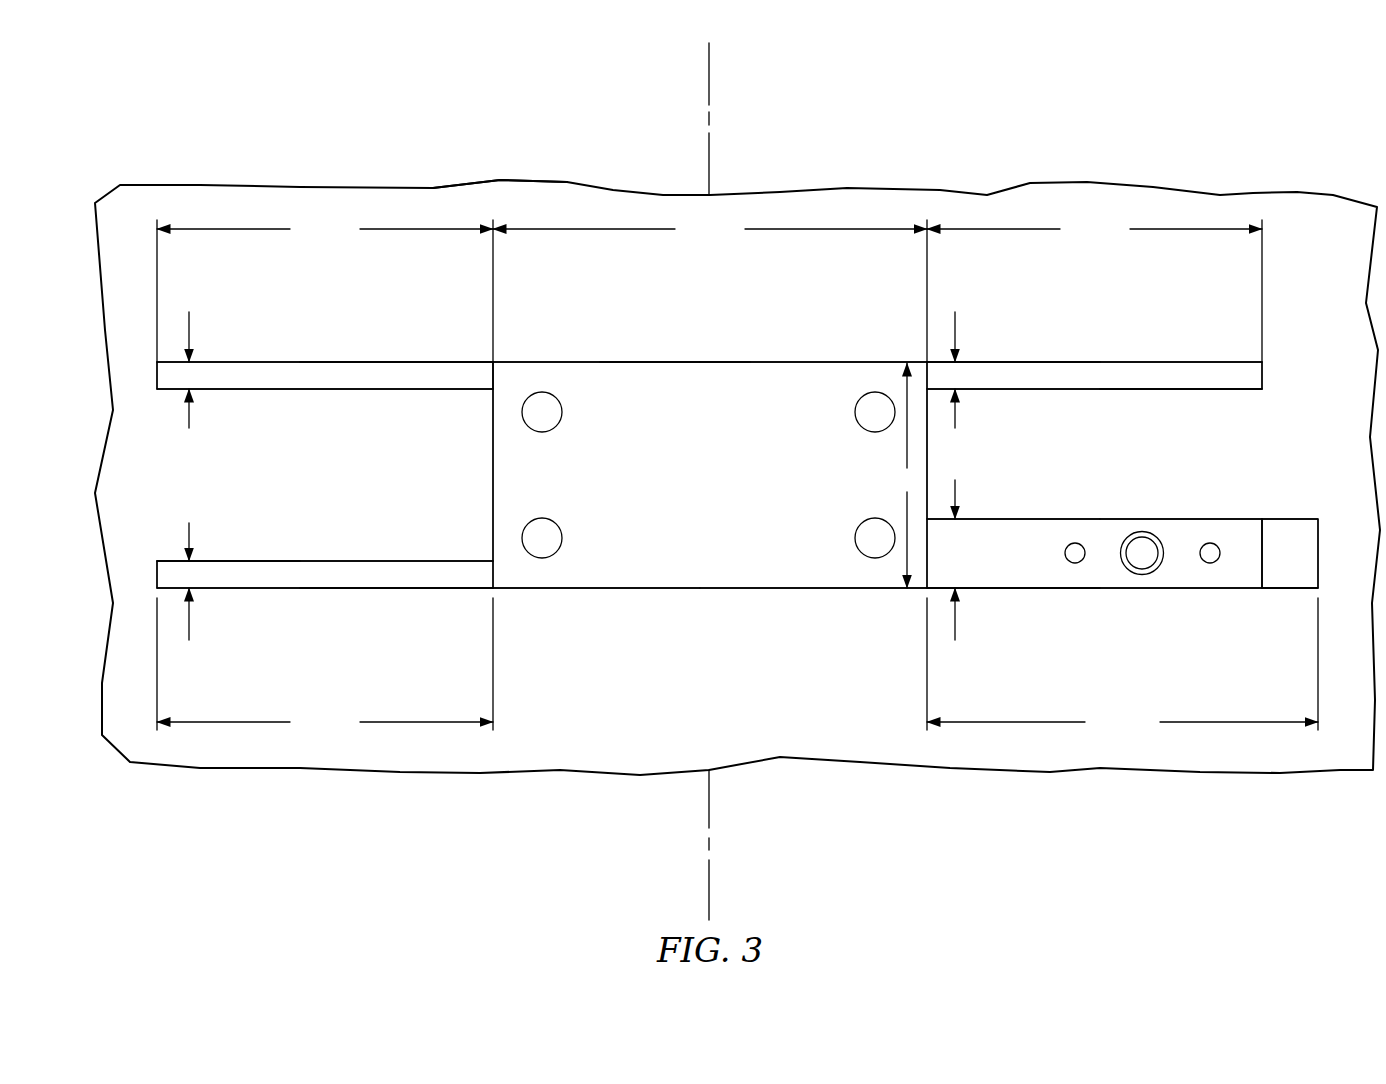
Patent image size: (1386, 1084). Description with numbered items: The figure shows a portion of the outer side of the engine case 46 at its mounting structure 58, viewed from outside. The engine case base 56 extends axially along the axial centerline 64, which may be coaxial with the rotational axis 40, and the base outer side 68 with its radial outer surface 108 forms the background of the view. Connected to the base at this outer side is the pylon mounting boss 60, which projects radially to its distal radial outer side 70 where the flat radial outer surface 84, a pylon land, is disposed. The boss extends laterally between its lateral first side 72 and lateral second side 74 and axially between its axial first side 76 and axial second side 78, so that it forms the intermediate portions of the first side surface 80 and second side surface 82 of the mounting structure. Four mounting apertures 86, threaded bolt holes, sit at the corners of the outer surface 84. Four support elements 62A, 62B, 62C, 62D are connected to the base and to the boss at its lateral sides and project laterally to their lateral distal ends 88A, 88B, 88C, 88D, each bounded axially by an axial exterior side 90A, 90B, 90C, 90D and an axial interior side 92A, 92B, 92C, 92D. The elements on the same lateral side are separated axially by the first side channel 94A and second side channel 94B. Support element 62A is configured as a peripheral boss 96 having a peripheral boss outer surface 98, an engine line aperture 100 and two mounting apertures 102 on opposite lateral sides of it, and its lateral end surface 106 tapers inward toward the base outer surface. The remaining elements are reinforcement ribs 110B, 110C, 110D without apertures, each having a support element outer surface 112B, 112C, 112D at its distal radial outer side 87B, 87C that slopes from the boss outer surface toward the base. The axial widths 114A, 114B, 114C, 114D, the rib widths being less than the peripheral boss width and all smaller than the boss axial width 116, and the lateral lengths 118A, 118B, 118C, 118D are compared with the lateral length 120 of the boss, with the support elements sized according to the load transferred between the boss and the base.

The rotational axis 40 is at (778, 481).
The axial centerline 64 is at (709, 70).
The engine case 46 is at (190, 142).
The engine case base 56 is at (525, 175).
The base outer side 68 is at (130, 713).
The pylon mounting boss 60 is at (707, 493).
The radial outer surface 84 is at (686, 491).
The distal radial outer side 70 is at (608, 382).
The second side surface 82 is at (675, 362).
The axial second side 78 is at (768, 362).
The first side surface 80 is at (587, 588).
The axial first side 76 is at (768, 588).
The lateral second side 74 is at (493, 443).
The lateral first side 72 is at (927, 447).
The engine case mounting structure 58 is at (475, 347).
The mounting apertures 86 is at (562, 415).
The radial outer surface of the base 108 is at (850, 721).
The lateral distal end 88D is at (157, 377).
The lateral distal end 88B is at (157, 567).
The lateral distal end 88C is at (1262, 377).
The lateral distal end 88A is at (1318, 553).
The mounting boss support element 62D is at (325, 314).
The reinforcement rib 110D is at (308, 358).
The axial exterior side 90D is at (395, 362).
The support element outer surface 112D is at (270, 378).
The axial interior side 92D is at (353, 389).
The mounting boss support element 62B is at (325, 636).
The reinforcement rib 110B is at (307, 593).
The axial exterior side 90B is at (395, 588).
The support element outer surface 112B is at (293, 572).
The axial interior side 92B is at (375, 561).
The distal radial outer side 87B is at (235, 577).
The mounting boss support element 62C is at (1094, 315).
The reinforcement rib 110C is at (1088, 357).
The axial exterior side 90C is at (1013, 362).
The support element outer surface 112C is at (1133, 375).
The axial interior side 92C is at (1002, 389).
The distal radial outer side 87C is at (1207, 372).
The mounting boss support element 62A is at (1122, 636).
The peripheral boss 96 is at (1110, 593).
The axial exterior side 90A is at (1012, 588).
The axial interior side 92A is at (987, 519).
The peripheral boss outer surface 98 is at (1178, 533).
The engine line aperture 100 is at (1142, 547).
The mounting apertures 102 is at (1075, 563).
The lateral end surface 106 is at (1282, 565).
The axial width 114A is at (955, 627).
The axial width 114B is at (189, 628).
The axial width 114C is at (955, 325).
The axial width 114D is at (189, 323).
The axial width of the mounting boss 116 is at (902, 475).
The lateral length 118A is at (1122, 667).
The lateral length 118B is at (325, 667).
The lateral length 118C is at (1094, 289).
The lateral length 118D is at (325, 289).
The lateral length of the mounting boss 120 is at (710, 230).
The first side channel 94A is at (1227, 467).
The second side channel 94B is at (152, 462).